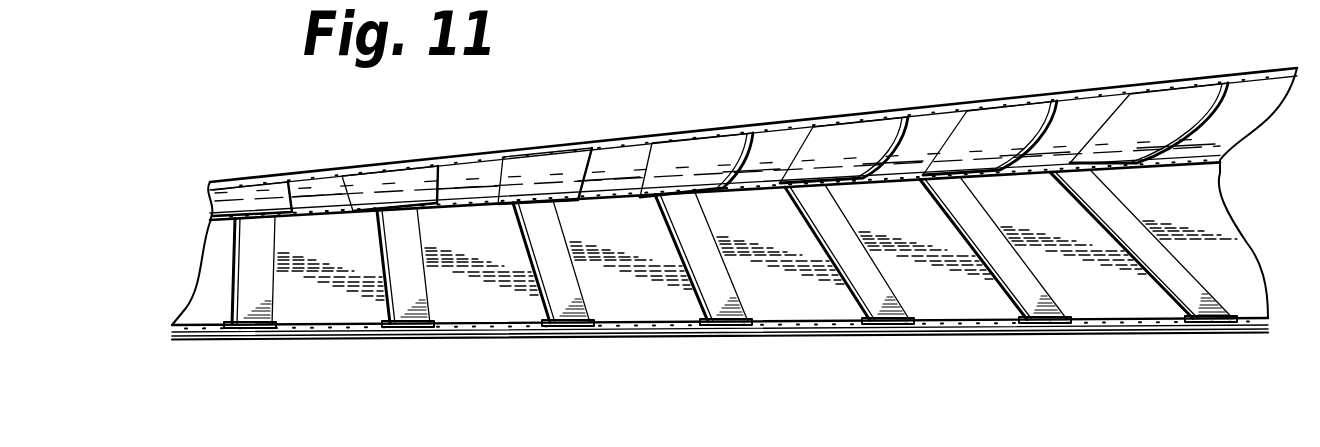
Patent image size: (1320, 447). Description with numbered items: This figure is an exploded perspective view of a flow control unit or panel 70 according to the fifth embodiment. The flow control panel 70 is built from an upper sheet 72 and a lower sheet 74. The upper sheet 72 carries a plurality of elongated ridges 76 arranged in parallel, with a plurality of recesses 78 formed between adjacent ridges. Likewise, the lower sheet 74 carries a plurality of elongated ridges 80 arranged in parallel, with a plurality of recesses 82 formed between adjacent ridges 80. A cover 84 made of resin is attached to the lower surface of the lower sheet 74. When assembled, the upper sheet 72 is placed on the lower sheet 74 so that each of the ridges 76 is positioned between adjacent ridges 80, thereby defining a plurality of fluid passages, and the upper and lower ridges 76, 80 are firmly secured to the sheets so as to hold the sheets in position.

The flow control unit 70 is at (824, 76).
The upper sheet 72 is at (1023, 92).
The lower sheet 74 is at (813, 333).
The elongated ridges 76 is at (627, 160).
The recesses 78 is at (698, 147).
The elongated ridges 80 is at (703, 307).
The recesses 82 is at (537, 315).
The cover 84 is at (1165, 333).